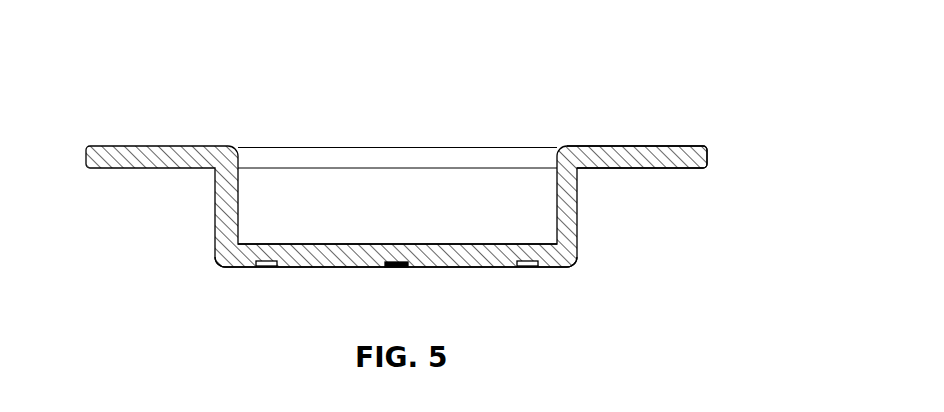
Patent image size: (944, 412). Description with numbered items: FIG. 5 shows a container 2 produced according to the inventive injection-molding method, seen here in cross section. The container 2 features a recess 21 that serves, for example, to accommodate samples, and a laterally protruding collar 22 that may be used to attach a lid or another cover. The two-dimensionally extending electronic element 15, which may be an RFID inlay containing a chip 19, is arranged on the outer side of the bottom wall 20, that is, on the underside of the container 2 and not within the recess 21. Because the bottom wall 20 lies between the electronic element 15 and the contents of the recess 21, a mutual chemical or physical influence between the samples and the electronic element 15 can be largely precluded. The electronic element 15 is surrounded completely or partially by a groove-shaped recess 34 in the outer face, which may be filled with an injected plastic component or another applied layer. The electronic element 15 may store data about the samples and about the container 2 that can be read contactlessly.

The container 2 is at (655, 144).
The two-dimensionally extending electronic element 15 is at (307, 269).
The chip 19 is at (393, 269).
The bottom wall 20 is at (490, 256).
The recess 21 is at (538, 188).
The collar 22 is at (674, 157).
The groove-shaped recess 34 is at (266, 268).